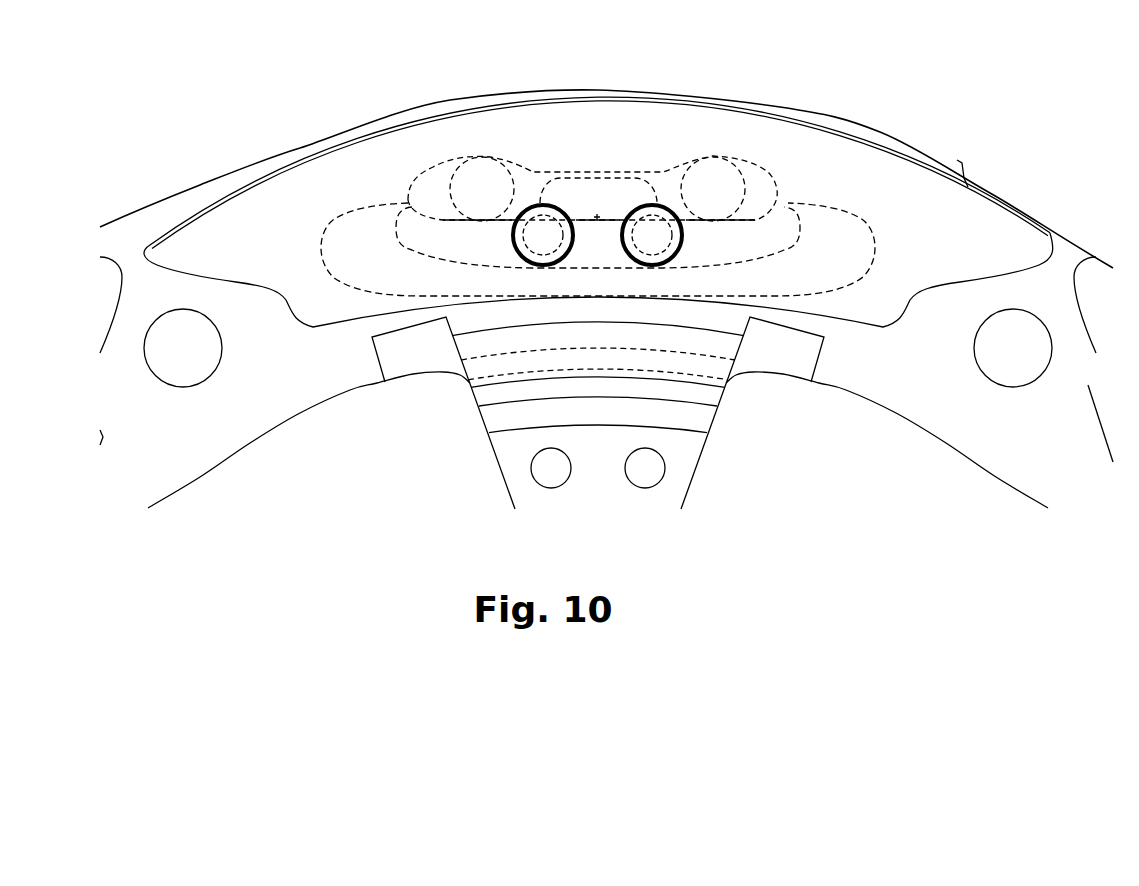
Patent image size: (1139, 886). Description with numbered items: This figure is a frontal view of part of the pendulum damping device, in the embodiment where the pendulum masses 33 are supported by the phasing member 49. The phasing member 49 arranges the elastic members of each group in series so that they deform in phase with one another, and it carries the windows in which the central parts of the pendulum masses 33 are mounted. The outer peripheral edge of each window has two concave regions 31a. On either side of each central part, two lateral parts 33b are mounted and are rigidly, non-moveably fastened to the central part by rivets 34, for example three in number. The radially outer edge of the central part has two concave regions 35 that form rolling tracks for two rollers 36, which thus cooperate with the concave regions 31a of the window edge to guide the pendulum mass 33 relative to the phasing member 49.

The pendulum mass 33 is at (593, 68).
The lateral part 33b is at (902, 197).
The concave region 35 is at (437, 212).
The roller 36 is at (457, 180).
The concave region 31a is at (517, 163).
The rivet 34 is at (517, 243).
The phasing member 49 is at (685, 450).